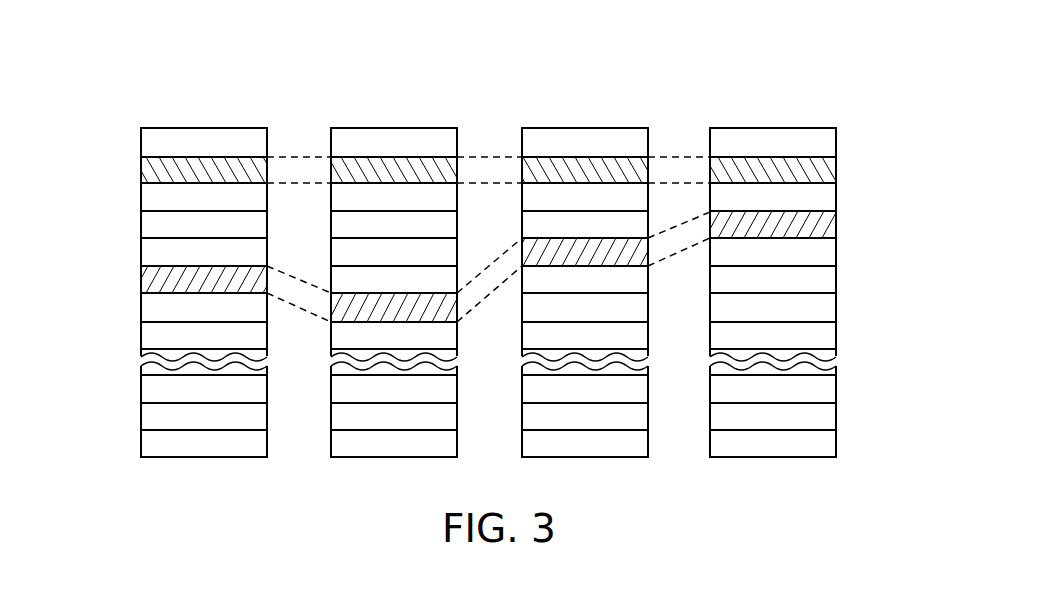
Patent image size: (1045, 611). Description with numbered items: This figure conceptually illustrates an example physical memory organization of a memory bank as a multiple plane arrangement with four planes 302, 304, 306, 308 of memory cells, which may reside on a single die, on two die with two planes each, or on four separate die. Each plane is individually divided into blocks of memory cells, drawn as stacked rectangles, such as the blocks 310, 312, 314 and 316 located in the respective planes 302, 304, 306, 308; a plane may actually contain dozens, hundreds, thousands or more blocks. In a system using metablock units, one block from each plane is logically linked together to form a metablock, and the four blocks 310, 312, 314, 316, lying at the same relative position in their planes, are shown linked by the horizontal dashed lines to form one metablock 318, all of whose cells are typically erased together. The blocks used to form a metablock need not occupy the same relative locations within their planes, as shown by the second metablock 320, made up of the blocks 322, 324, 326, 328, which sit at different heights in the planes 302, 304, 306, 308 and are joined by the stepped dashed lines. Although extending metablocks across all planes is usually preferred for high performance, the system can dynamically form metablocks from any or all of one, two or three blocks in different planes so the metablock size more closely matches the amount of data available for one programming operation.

The plane 302 is at (208, 127).
The plane 304 is at (378, 127).
The plane 306 is at (553, 127).
The plane 308 is at (783, 127).
The block 310 is at (170, 170).
The block 312 is at (373, 172).
The block 314 is at (547, 170).
The block 316 is at (805, 170).
The metablock 318 is at (685, 168).
The second metablock 320 is at (680, 240).
The block 322 is at (160, 278).
The block 324 is at (365, 305).
The block 326 is at (570, 248).
The block 328 is at (810, 222).